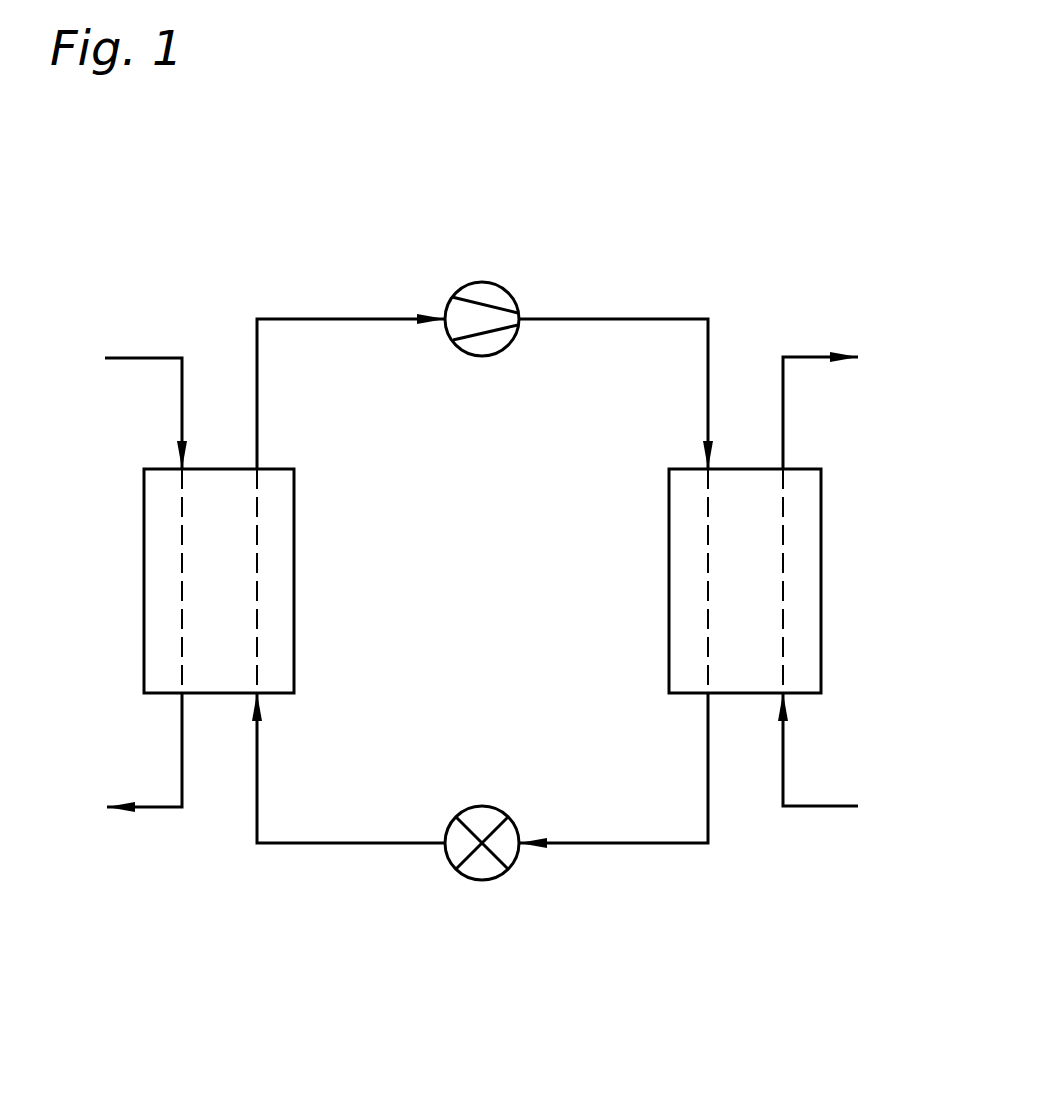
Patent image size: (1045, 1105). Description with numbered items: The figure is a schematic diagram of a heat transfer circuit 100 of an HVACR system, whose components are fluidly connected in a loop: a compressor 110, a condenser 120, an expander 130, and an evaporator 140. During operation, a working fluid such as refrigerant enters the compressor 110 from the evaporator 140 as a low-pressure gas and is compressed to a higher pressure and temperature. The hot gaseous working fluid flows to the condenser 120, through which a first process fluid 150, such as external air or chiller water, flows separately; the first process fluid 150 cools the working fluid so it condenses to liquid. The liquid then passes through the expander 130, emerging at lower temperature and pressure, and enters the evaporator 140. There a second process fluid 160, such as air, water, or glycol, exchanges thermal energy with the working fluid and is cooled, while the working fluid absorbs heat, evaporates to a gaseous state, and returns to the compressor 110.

The heat transfer circuit 100 is at (748, 141).
The compressor 110 is at (503, 283).
The condenser 120 is at (807, 469).
The expander 130 is at (498, 878).
The evaporator 140 is at (278, 469).
The first process fluid 150 is at (840, 806).
The second process fluid 160 is at (122, 355).